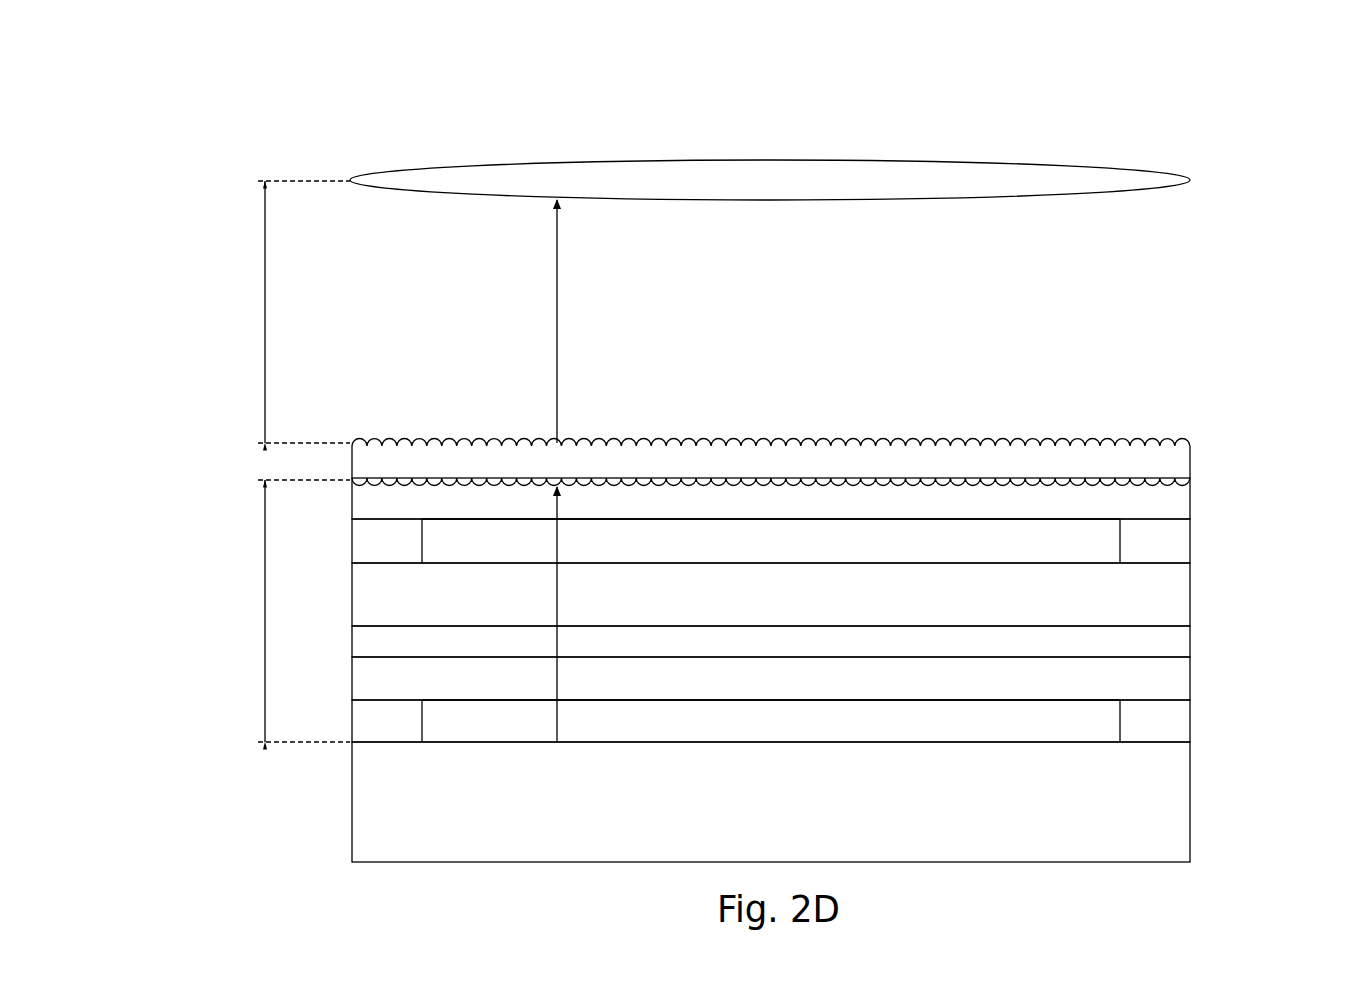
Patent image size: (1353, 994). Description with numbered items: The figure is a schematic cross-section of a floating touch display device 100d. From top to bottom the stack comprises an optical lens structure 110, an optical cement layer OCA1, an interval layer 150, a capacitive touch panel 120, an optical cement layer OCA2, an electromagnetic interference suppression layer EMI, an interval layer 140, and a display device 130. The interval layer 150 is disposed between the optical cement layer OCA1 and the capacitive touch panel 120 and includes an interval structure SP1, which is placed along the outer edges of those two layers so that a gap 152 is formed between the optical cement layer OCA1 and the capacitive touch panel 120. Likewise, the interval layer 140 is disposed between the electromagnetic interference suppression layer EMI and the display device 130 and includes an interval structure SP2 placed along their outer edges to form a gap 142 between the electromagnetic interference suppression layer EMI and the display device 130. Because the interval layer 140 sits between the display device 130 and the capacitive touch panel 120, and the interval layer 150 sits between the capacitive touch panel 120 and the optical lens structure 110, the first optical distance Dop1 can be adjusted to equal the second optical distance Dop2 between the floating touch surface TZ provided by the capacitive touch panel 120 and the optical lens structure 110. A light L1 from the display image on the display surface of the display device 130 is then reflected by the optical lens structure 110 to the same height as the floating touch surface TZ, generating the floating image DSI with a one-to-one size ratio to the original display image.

The floating touch display device 100d is at (1312, 66).
The floating touch surface TZ is at (858, 165).
The floating image DSI is at (1140, 172).
The light L1 is at (575, 471).
The second optical distance Dop2 is at (270, 312).
The first optical distance Dop1 is at (270, 611).
The optical lens structure 110 is at (1182, 459).
The optical cement layer OCA1 is at (1110, 513).
The interval layer 150 is at (1192, 541).
The interval structure SP1 is at (410, 553).
The gap 152 is at (790, 553).
The capacitive touch panel 120 is at (1182, 594).
The optical cement layer OCA2 is at (1182, 642).
The electromagnetic interference suppression layer EMI is at (1100, 689).
The interval layer 140 is at (1192, 721).
The interval structure SP2 is at (410, 734).
The gap 142 is at (790, 733).
The display device 130 is at (1182, 802).